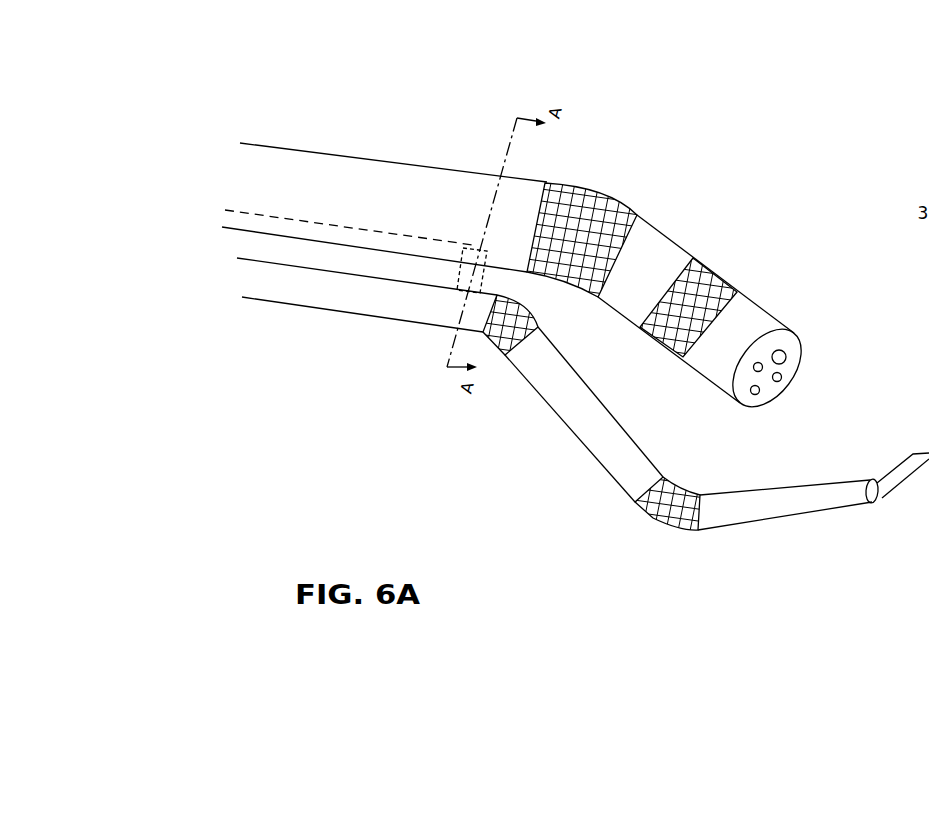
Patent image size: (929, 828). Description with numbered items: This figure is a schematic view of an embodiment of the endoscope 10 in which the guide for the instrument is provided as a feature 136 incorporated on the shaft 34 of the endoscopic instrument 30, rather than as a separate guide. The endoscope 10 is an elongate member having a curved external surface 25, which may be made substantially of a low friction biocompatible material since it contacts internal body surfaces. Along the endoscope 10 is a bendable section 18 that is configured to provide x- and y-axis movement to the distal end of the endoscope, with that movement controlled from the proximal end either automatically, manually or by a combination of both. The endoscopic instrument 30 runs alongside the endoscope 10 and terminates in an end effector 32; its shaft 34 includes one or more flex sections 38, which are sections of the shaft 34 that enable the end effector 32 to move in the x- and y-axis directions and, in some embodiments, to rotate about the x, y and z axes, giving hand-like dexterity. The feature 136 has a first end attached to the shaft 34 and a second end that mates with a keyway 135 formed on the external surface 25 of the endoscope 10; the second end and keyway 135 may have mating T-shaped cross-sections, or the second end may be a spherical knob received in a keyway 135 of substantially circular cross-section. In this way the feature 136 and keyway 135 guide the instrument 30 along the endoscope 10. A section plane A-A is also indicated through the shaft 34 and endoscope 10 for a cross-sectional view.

The endoscope 10 is at (440, 162).
The bendable section 18 is at (597, 208).
The external surface 25 is at (300, 172).
The endoscopic instrument 30 is at (573, 453).
The end effector 32 is at (897, 490).
The shaft 34 is at (270, 292).
The flex section 38 is at (484, 338).
The keyway 135 is at (330, 225).
The feature 136 is at (470, 268).